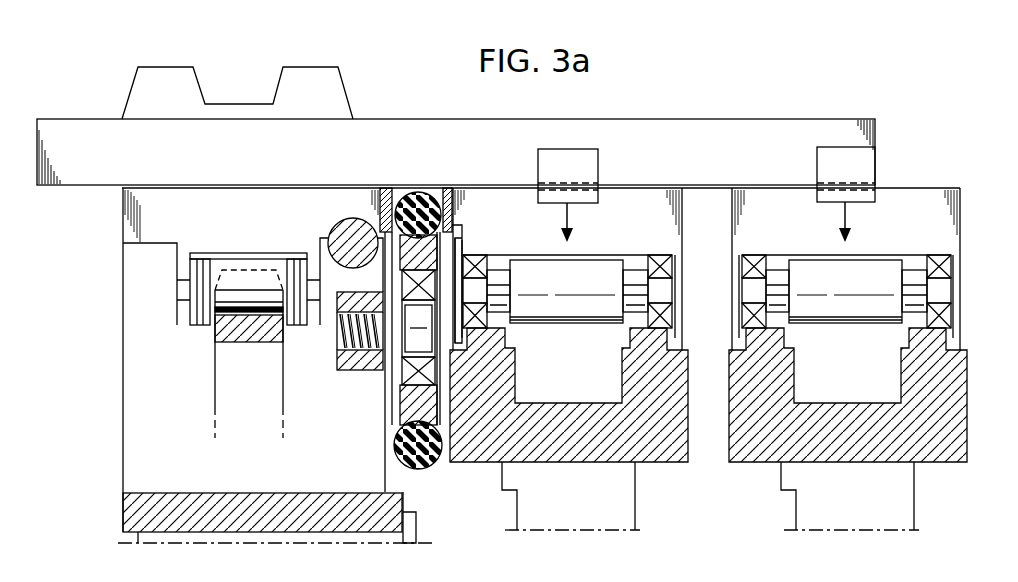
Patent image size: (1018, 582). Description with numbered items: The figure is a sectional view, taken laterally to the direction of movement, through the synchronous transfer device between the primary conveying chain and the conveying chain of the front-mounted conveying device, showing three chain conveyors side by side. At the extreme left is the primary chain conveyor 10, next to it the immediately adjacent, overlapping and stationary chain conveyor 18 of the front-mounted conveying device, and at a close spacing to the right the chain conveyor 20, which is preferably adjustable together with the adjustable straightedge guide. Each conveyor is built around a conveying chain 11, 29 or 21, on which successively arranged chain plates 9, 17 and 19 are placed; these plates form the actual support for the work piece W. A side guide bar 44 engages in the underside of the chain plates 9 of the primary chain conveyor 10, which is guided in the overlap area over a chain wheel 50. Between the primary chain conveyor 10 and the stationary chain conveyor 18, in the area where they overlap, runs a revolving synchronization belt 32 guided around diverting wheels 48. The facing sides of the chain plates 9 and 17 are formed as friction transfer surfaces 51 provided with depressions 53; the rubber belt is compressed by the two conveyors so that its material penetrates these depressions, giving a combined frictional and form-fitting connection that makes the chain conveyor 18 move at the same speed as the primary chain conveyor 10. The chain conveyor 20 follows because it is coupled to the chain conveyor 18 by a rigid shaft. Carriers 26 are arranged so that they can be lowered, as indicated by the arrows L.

The chain plates 9 is at (123, 221).
The primary chain conveyor 10 is at (113, 535).
The conveying chain 11 is at (213, 331).
The chain plates 17 is at (656, 207).
The chain conveyor 18 is at (607, 535).
The chain plates 19 is at (560, 305).
The chain conveyor 20 is at (882, 535).
The conveying chain 21 is at (845, 303).
The carriers 26 is at (580, 152).
The conveying chain 29 is at (961, 187).
The synchronization belt 32 is at (432, 462).
The side guide bar 44 is at (336, 232).
The diverting wheels 48 is at (440, 250).
The chain wheel 50 is at (283, 370).
The friction transfer surfaces 51 is at (443, 186).
The depressions 53 is at (382, 186).
The work piece W is at (766, 137).
The arrows L is at (568, 218).
The feed direction X is at (416, 114).